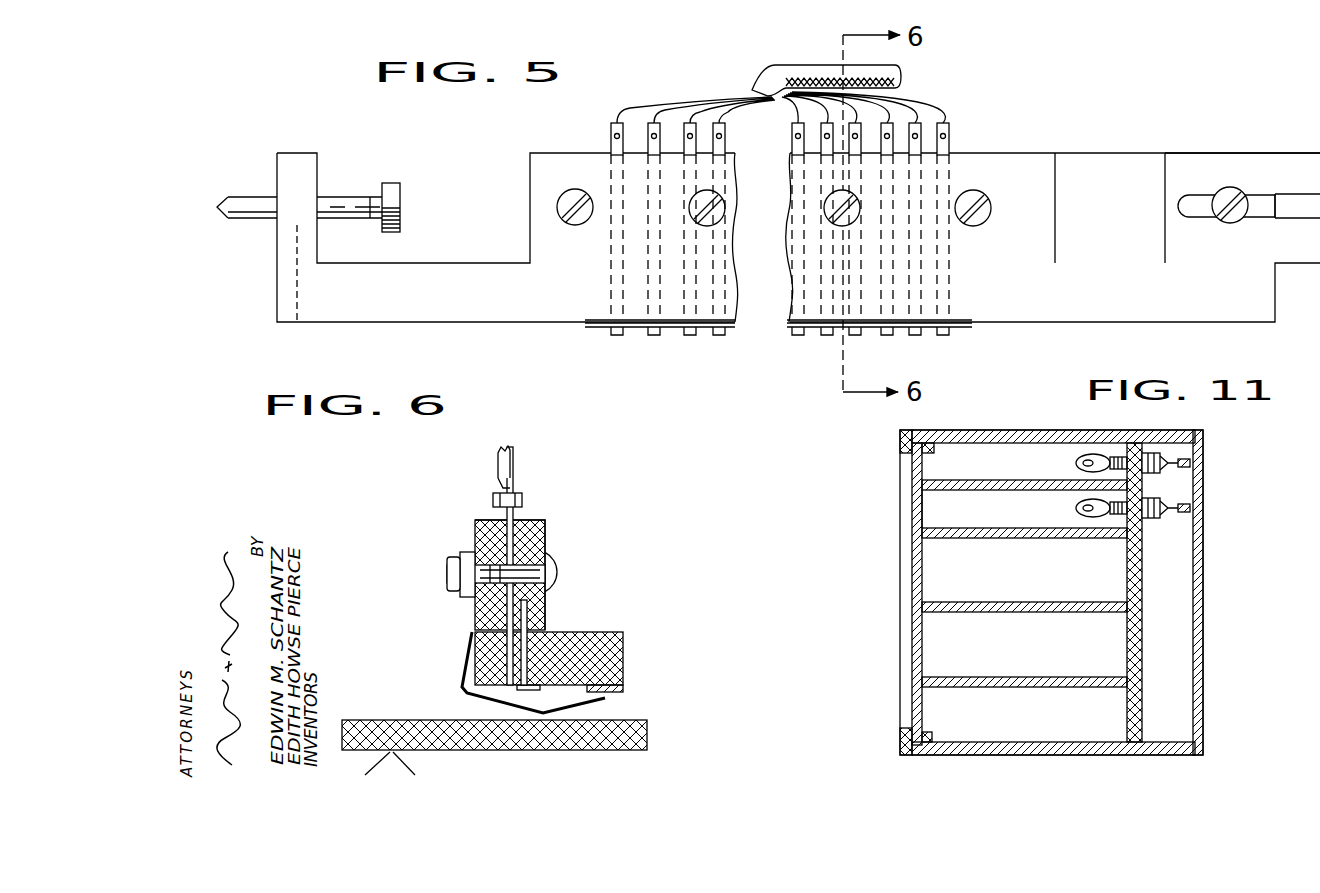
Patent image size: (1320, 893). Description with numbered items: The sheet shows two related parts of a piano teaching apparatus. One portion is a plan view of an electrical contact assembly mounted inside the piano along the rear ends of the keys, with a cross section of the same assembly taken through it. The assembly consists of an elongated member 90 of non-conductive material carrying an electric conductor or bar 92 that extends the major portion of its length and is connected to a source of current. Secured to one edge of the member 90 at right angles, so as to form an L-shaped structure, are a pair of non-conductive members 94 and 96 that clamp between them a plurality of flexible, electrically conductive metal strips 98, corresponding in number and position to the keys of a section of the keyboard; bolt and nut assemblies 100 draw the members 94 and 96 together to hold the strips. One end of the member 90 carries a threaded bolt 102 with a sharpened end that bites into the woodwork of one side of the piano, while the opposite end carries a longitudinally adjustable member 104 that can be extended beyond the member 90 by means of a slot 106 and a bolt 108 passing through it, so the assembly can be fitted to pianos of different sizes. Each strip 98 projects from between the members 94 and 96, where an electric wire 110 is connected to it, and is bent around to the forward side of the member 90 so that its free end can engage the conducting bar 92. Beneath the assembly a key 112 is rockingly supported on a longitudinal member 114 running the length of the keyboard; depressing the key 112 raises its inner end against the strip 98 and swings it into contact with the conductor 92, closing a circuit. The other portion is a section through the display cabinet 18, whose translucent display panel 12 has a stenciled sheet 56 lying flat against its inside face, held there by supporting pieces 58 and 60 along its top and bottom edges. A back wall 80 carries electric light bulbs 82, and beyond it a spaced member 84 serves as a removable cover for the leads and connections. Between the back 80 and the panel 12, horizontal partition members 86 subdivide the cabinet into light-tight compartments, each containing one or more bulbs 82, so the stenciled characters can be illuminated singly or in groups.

In FIG. 11, the display panel 12 is at (917, 474).
In FIG. 11, the cabinet 18 is at (960, 430).
In FIG. 11, the stenciled sheet 56 is at (925, 577).
In FIG. 11, the supporting piece 58 is at (938, 450).
In FIG. 11, the supporting piece 60 is at (932, 738).
In FIG. 11, the back wall 80 is at (1135, 580).
In FIG. 11, the electric light bulb 82 is at (1078, 506).
In FIG. 11, the removable cover member 84 is at (1198, 612).
In FIG. 11, the horizontal partition member 86 is at (1025, 540).
In FIG. 5, the elongated member 90 is at (1133, 312).
In FIG. 6, the elongated member 90 is at (624, 650).
In FIG. 5, the conductor bar 92 is at (962, 326).
In FIG. 6, the conductor bar 92 is at (624, 688).
In FIG. 6, the clamping member 94 is at (548, 528).
In FIG. 5, the clamping member 96 is at (1042, 160).
In FIG. 6, the clamping member 96 is at (475, 532).
In FIG. 5, the flexible metal strip 98 is at (926, 292).
In FIG. 6, the flexible metal strip 98 is at (506, 608).
In FIG. 5, the bolt and nut assembly 100 is at (566, 191).
In FIG. 6, the bolt and nut assembly 100 is at (560, 576).
In FIG. 5, the threaded bolt 102 is at (368, 197).
In FIG. 5, the longitudinally adjustable member 104 is at (1252, 162).
In FIG. 5, the slot 106 is at (1268, 214).
In FIG. 5, the bolt 108 is at (1237, 214).
In FIG. 6, the electric wire 110 is at (512, 448).
In FIG. 6, the key 112 is at (567, 742).
In FIG. 6, the longitudinal member 114 is at (393, 755).